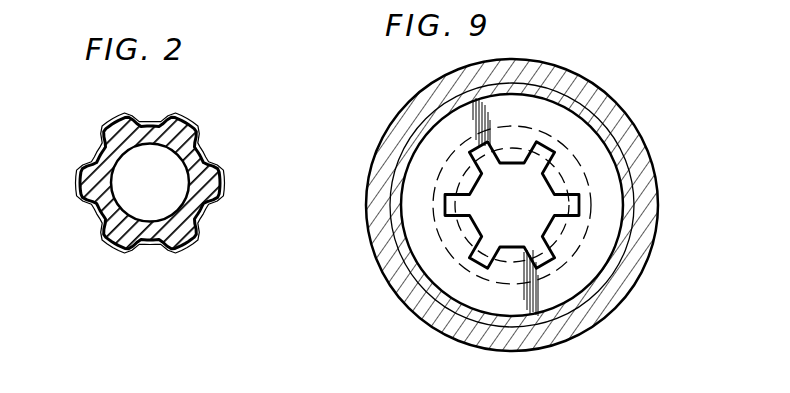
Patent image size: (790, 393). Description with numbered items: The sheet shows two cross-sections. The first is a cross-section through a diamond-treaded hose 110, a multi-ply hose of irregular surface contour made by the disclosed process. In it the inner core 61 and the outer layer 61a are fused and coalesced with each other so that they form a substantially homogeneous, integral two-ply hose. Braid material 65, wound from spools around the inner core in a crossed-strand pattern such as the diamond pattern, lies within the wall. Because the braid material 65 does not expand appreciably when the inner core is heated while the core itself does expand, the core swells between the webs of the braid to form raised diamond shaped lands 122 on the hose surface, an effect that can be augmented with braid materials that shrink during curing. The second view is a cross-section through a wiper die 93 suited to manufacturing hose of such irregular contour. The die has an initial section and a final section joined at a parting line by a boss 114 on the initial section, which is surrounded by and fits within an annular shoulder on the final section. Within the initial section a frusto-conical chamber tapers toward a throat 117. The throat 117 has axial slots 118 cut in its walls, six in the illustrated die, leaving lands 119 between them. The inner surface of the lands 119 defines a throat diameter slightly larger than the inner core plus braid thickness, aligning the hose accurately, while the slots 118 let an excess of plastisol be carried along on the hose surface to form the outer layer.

In FIG. 2, the diamond-treaded hose 110 is at (158, 177).
In FIG. 2, the raised diamond shaped lands 122 is at (192, 132).
In FIG. 2, the braid material 65 is at (203, 162).
In FIG. 2, the inner core 61 is at (197, 185).
In FIG. 2, the outer layer 61a is at (203, 220).
In FIG. 9, the wiper die 93 is at (533, 205).
In FIG. 9, the boss 114 is at (605, 163).
In FIG. 9, the throat 117 is at (504, 222).
In FIG. 9, the axial slots 118 is at (548, 156).
In FIG. 9, the lands 119 is at (565, 195).